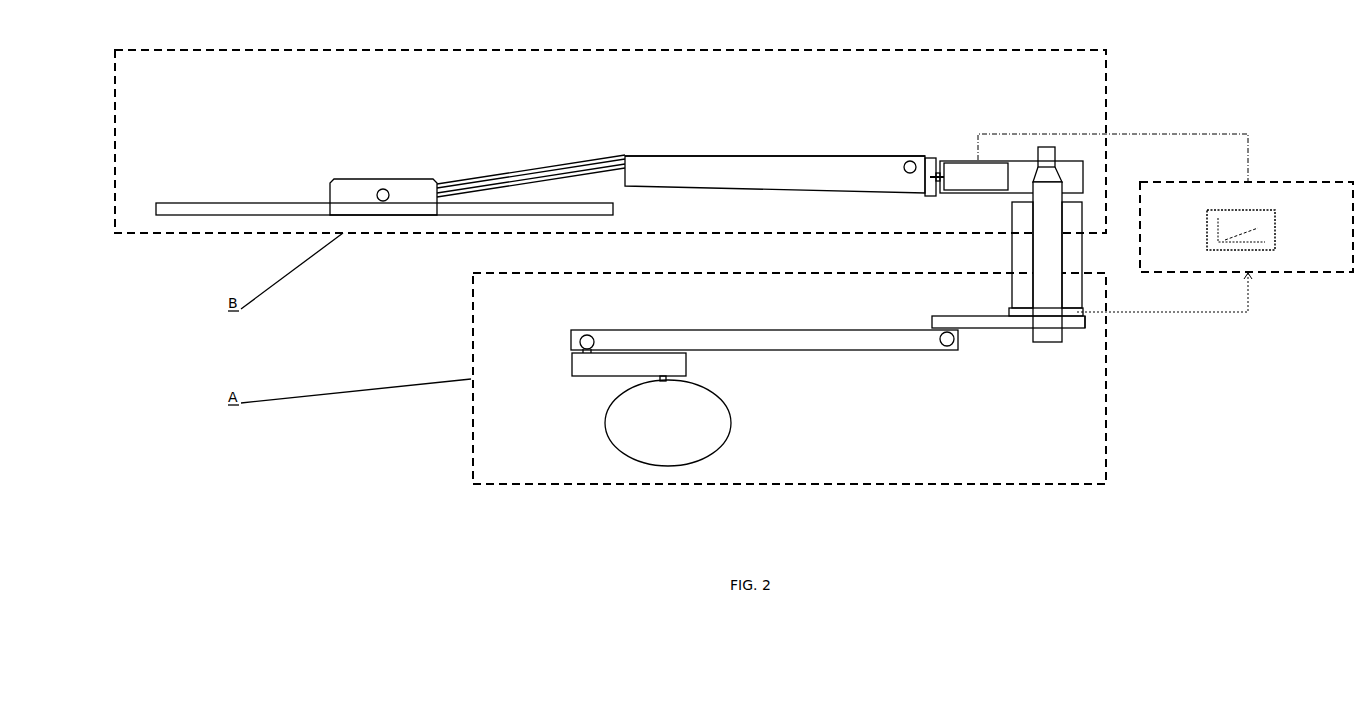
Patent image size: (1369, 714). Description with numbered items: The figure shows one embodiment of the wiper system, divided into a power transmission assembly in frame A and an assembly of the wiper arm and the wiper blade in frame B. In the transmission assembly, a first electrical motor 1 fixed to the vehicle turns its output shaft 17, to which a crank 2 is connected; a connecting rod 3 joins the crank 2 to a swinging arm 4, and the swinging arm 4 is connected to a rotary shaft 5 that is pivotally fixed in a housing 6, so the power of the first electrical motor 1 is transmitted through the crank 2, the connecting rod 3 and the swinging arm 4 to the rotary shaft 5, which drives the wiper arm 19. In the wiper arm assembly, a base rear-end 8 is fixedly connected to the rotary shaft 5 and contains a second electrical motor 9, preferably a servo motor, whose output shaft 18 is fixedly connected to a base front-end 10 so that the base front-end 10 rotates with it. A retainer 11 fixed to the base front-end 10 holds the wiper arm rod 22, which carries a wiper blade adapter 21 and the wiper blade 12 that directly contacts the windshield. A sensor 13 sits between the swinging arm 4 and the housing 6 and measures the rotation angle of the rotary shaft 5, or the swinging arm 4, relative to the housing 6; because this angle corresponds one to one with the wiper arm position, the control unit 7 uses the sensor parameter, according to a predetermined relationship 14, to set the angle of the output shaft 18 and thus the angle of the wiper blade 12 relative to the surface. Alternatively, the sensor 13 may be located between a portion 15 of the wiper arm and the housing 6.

The first electrical motor 1 is at (628, 432).
The crank 2 is at (600, 365).
The connecting rod 3 is at (750, 343).
The swinging arm 4 is at (984, 322).
The rotary shaft 5 is at (1045, 289).
The housing 6 is at (1068, 293).
The control unit 7 is at (1313, 245).
The base rear-end 8 is at (1020, 167).
The second electrical motor 9 is at (957, 170).
The base front-end 10 is at (931, 164).
The retainer 11 is at (658, 163).
The wiper blade 12 is at (262, 208).
The sensor 13 is at (1085, 327).
The predetermined relationship 14 is at (1258, 244).
The portion of the wiper arm 15 is at (1015, 147).
The output shaft of the first electrical motor 17 is at (660, 378).
The output shaft of the second electrical motor 18 is at (935, 177).
The wiper arm 19 is at (706, 135).
The wiper blade adapter 21 is at (372, 183).
The wiper arm rod 22 is at (488, 182).